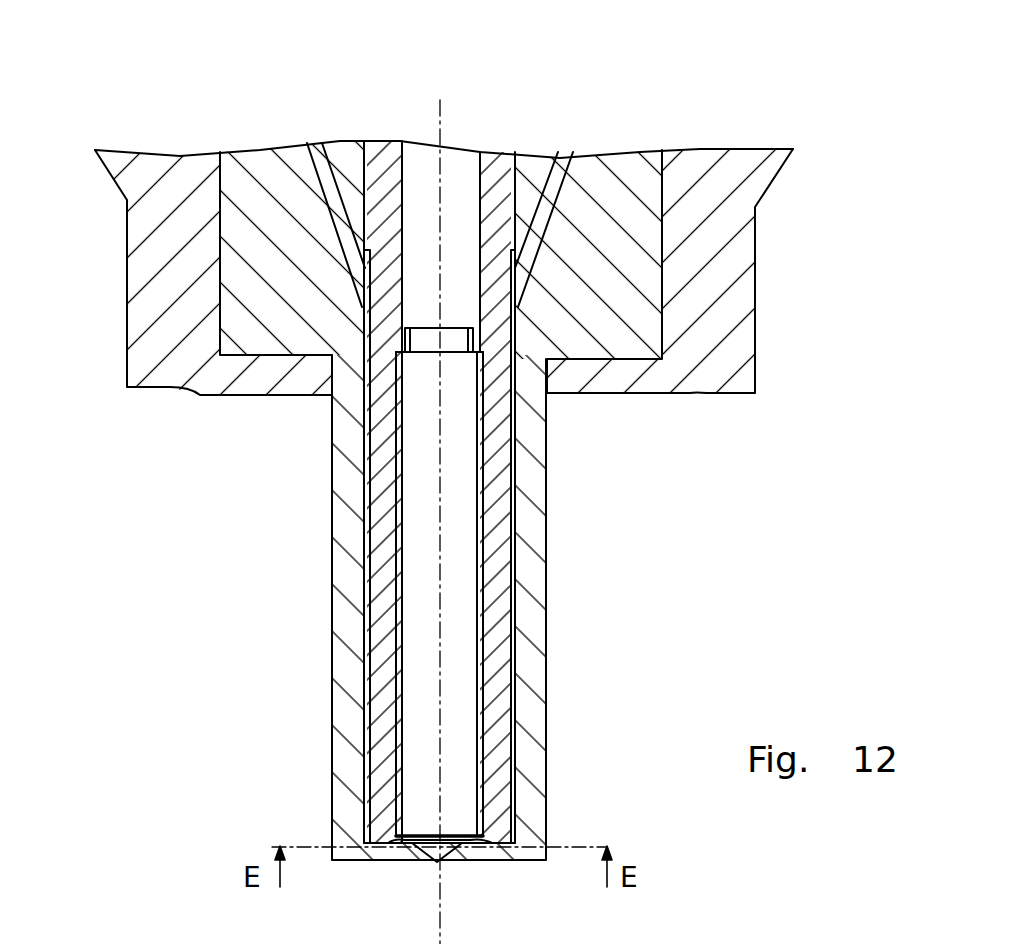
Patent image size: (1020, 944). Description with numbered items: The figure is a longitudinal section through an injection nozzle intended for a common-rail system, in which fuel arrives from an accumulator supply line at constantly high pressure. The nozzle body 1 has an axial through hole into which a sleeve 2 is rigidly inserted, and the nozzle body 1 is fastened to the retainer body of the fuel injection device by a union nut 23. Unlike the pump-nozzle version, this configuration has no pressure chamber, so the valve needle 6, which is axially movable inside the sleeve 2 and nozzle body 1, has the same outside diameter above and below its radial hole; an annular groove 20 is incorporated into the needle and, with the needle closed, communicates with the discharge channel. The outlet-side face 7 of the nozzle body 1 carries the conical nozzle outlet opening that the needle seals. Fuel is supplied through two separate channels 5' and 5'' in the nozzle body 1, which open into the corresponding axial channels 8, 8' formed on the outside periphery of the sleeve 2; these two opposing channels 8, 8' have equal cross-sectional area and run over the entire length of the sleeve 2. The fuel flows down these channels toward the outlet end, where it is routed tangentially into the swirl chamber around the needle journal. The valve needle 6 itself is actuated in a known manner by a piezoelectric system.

The nozzle body 1 is at (530, 601).
The sleeve 2 is at (495, 541).
The channel 5' is at (197, 153).
The channel 5'' is at (695, 156).
The valve needle 6 is at (458, 482).
The outlet-side face 7 is at (460, 863).
The channel 8 is at (690, 546).
The channel 8' is at (198, 546).
The annular groove 20 is at (479, 336).
The union nut 23 is at (710, 232).